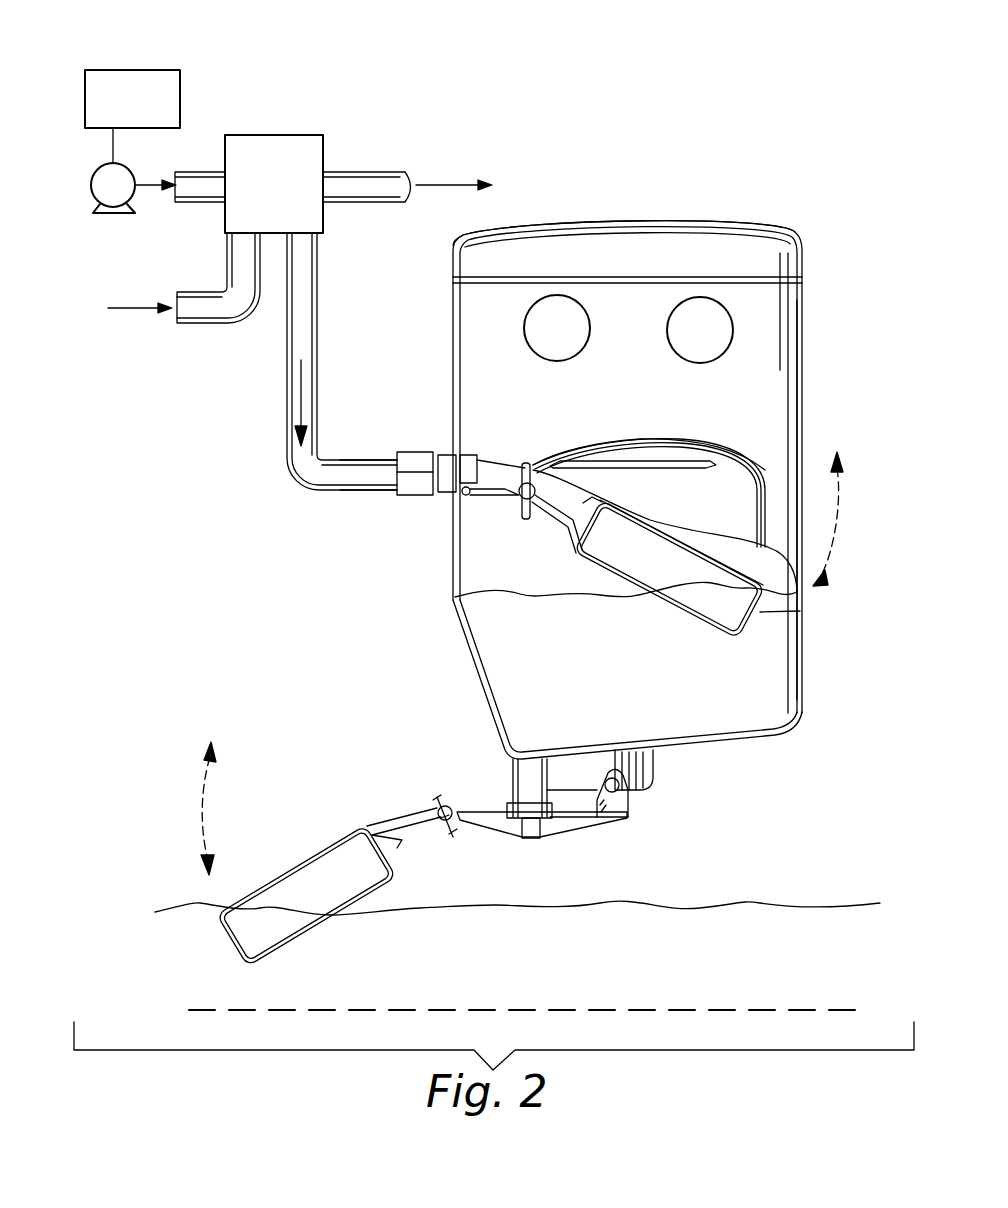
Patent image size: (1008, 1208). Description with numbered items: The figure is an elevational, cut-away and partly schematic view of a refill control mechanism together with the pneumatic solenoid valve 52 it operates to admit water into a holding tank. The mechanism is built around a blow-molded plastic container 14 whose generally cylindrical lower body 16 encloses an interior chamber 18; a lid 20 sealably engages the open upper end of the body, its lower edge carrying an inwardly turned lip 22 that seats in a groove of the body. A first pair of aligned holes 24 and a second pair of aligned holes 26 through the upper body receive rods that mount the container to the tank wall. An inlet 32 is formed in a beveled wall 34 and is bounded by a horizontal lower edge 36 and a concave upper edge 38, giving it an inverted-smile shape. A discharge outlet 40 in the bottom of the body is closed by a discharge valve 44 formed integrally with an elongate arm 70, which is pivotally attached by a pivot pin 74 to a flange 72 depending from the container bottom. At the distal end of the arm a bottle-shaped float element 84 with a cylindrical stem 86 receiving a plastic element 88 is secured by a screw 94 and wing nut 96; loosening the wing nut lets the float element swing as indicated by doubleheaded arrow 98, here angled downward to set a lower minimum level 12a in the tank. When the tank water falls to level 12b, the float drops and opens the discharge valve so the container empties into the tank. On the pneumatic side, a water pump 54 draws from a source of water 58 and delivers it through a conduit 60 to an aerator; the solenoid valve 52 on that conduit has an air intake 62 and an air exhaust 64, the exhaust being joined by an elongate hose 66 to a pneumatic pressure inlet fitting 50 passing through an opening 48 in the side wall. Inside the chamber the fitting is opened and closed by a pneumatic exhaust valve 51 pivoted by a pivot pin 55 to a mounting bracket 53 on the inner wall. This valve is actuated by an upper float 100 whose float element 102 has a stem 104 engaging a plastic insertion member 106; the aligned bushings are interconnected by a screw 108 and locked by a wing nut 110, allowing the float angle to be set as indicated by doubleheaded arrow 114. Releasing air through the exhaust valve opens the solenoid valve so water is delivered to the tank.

The lower minimum level 12a is at (738, 902).
The water level 12b is at (572, 1010).
The plastic container 14 is at (455, 560).
The lower body 16 is at (460, 630).
The interior chamber 18 is at (767, 408).
The lid 20 is at (783, 250).
The inwardly turned lip 22 is at (802, 277).
The first pair of aligned holes 24 is at (524, 322).
The second pair of aligned holes 26 is at (718, 353).
The inlet 32 is at (585, 447).
The beveled wall 34 is at (560, 452).
The horizontal lower edge 36 is at (643, 463).
The concave upper edge 38 is at (648, 442).
The discharge outlet 40 is at (533, 758).
The discharge valve 44 is at (514, 812).
The opening 48 is at (455, 452).
The pneumatic pressure inlet fitting 50 is at (445, 496).
The pneumatic exhaust valve 51 is at (530, 467).
The pneumatic solenoid valve 52 is at (250, 135).
The mounting bracket 53 is at (462, 452).
The water pump 54 is at (113, 214).
The pivot pin 55 is at (470, 497).
The source of water 58 is at (120, 70).
The conduit 60 is at (197, 172).
The air intake 62 is at (200, 325).
The air exhaust 64 is at (318, 287).
The elongate hose 66 is at (352, 460).
The elongate arm 70 is at (562, 816).
The flange 72 is at (657, 760).
The pivot pin 74 is at (619, 789).
The bottle-shaped float element 84 is at (313, 852).
The cylindrical stem 86 is at (400, 830).
The plastic element 88 is at (432, 815).
The screw 94 is at (447, 800).
The wing nut 96 is at (443, 827).
The doubleheaded arrow 98 is at (200, 818).
The upper float 100 is at (800, 611).
The float element 102 is at (738, 640).
The stem 104 is at (648, 558).
The plastic insertion member 106 is at (595, 550).
The pivot 108 is at (524, 500).
The wing nut 110 is at (525, 463).
The doubleheaded arrow 114 is at (840, 518).